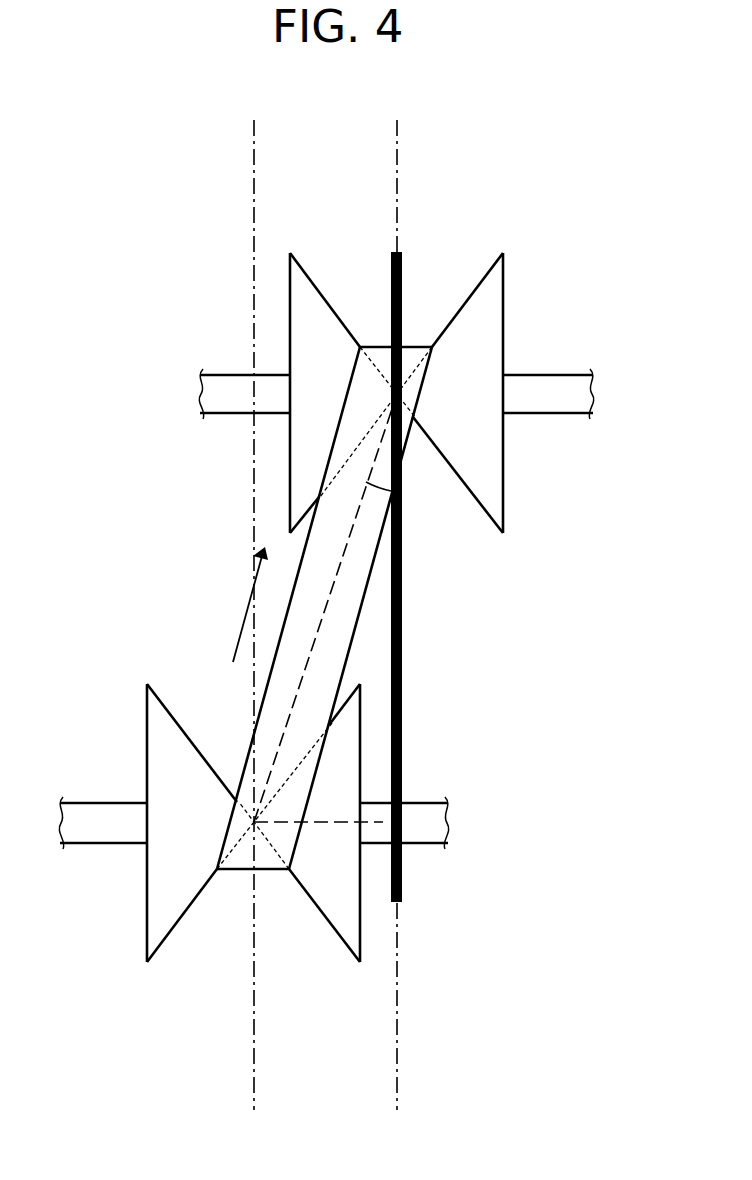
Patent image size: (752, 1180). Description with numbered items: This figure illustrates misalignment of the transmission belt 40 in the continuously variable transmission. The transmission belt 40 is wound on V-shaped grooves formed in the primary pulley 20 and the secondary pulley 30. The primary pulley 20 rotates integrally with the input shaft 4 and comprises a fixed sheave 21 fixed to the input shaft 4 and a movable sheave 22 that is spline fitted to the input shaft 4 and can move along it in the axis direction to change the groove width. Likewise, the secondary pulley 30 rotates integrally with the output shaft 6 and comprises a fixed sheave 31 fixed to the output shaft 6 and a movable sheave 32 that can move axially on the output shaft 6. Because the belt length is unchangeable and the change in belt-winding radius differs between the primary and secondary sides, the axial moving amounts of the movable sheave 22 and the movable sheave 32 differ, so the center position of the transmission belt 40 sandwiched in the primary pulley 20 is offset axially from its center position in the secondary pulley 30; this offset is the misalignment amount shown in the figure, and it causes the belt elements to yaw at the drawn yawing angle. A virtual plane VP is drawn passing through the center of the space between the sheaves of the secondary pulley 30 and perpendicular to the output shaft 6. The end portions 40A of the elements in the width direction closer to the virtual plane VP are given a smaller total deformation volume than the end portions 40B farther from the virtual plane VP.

The input shaft 4 is at (90, 803).
The output shaft 6 is at (580, 414).
The primary pulley 20 is at (247, 823).
The fixed sheave 21 is at (147, 935).
The movable sheave 22 is at (360, 918).
The secondary pulley 30 is at (430, 393).
The fixed sheave 31 is at (503, 492).
The movable sheave 32 is at (290, 318).
The transmission belt 40 is at (346, 608).
The end portions of the elements closer to the virtual plane 40A is at (364, 636).
The end portions of the elements farther from the virtual plane 40B is at (267, 682).
The virtual plane VP is at (402, 729).